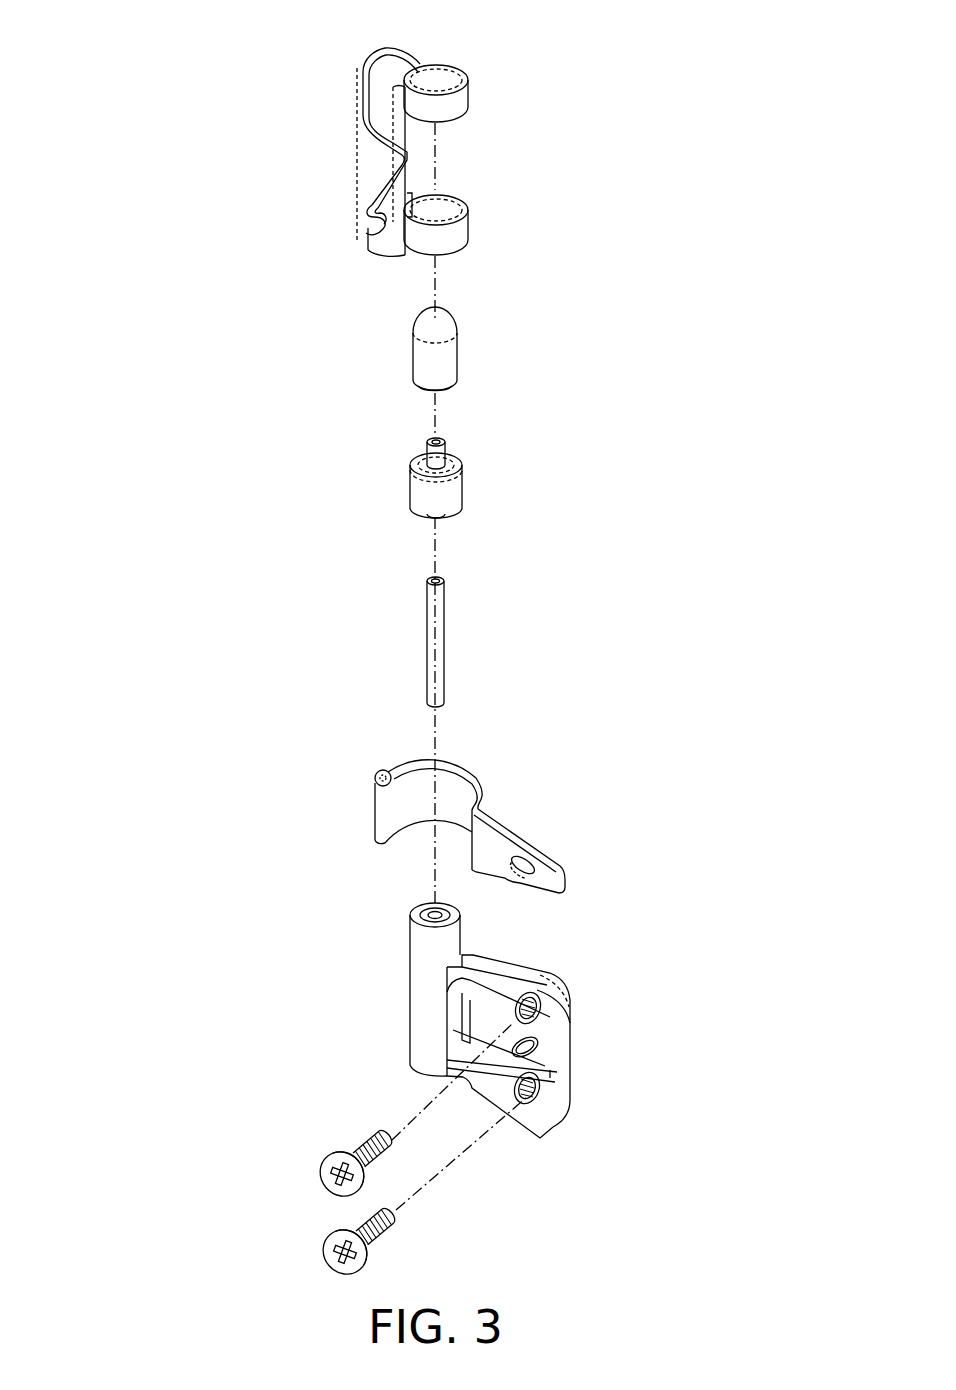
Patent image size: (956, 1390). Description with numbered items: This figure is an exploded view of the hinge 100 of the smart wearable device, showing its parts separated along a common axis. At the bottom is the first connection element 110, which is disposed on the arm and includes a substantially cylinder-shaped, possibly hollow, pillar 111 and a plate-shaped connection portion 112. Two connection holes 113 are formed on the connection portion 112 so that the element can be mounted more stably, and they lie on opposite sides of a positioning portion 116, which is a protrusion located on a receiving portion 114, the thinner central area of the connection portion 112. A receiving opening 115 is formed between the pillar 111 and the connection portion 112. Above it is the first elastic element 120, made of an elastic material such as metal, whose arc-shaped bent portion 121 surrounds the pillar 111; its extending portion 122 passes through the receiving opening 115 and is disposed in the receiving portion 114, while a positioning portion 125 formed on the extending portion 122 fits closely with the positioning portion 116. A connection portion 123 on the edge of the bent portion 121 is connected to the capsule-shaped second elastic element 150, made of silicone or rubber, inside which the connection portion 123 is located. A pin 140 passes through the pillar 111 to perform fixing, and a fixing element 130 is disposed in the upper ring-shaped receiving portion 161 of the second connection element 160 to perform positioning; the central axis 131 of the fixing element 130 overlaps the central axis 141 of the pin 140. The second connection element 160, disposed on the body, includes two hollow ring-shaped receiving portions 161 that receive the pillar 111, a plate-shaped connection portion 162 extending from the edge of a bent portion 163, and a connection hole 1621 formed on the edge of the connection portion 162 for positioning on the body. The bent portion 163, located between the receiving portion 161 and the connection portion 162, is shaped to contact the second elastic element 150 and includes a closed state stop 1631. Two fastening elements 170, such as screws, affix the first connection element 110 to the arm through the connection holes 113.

The hinge 100 is at (132, 62).
The first connection element 110 is at (559, 962).
The pillar 111 is at (418, 988).
The connection portion 112 is at (566, 1047).
The connection hole 113 is at (541, 1016).
The receiving portion 114 is at (566, 1090).
The receiving opening 115 is at (521, 968).
The positioning portion 116 is at (548, 1058).
The first elastic element 120 is at (528, 773).
The bent portion 121 is at (465, 782).
The extending portion 122 is at (555, 877).
The connection portion 123 is at (377, 782).
The positioning portion 125 is at (519, 862).
The fixing element 130 is at (458, 440).
The central axis 131 is at (428, 490).
The pin 140 is at (421, 692).
The central axis 141 is at (426, 642).
The second elastic element 150 is at (448, 352).
The second connection element 160 is at (459, 52).
The receiving portion 161 is at (464, 103).
The connection portion 162 is at (388, 251).
The bent portion 163 is at (364, 173).
The connection hole 1621 is at (380, 217).
The closed state stop 1631 is at (379, 89).
The fastening element 170 is at (338, 1150).